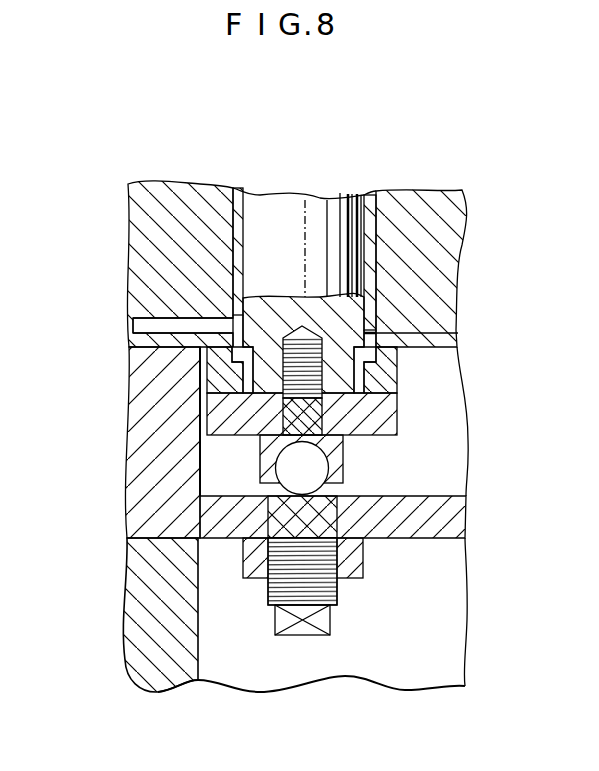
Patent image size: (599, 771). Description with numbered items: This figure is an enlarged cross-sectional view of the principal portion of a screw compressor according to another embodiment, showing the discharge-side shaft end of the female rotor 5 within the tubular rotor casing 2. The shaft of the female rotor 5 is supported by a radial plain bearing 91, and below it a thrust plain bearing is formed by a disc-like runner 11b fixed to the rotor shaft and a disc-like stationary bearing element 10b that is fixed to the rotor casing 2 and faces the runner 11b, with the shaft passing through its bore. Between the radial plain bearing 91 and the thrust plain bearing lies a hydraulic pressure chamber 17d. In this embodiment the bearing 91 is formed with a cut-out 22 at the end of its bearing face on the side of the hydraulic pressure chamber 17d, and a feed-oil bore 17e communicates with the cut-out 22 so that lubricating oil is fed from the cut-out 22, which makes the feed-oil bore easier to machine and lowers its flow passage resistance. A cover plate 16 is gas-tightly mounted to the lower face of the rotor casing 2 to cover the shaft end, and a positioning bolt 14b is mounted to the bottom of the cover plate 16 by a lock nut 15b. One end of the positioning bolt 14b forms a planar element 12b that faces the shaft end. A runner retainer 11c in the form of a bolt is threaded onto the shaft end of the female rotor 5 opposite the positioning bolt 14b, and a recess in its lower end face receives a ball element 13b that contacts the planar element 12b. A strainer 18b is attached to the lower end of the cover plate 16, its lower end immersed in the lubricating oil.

The rotor casing 2 is at (165, 197).
The radial plain bearing 91 is at (240, 195).
The female rotor 5 is at (330, 197).
The cut-out 22 is at (238, 324).
The feed-oil bore 17e is at (152, 328).
The hydraulic pressure chamber 17d is at (458, 333).
The stationary bearing element 10b is at (222, 378).
The cover plate 16 is at (135, 436).
The runner 11b is at (388, 407).
The runner retainer 11c is at (332, 457).
The ball element 13b is at (297, 485).
The planar element 12b is at (323, 497).
The lock nut 15b is at (365, 563).
The positioning bolt 14b is at (338, 594).
The strainer 18b is at (150, 628).